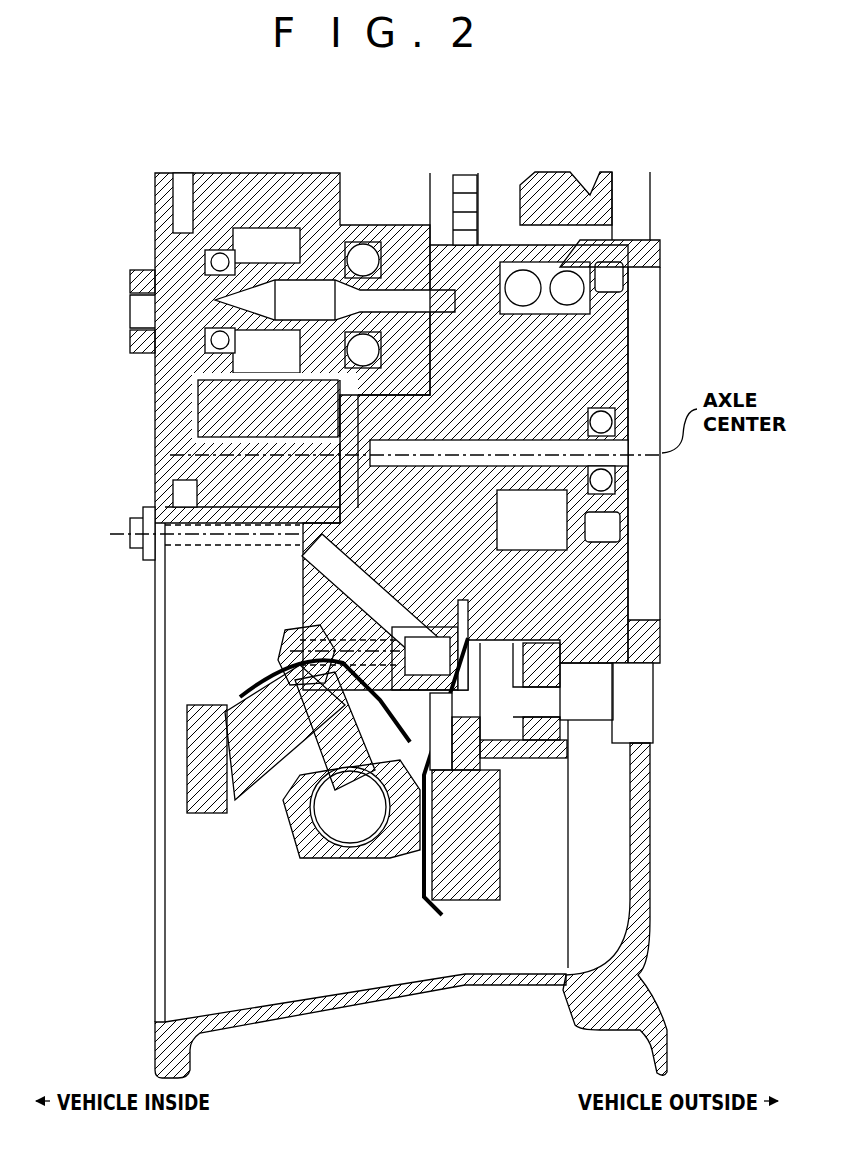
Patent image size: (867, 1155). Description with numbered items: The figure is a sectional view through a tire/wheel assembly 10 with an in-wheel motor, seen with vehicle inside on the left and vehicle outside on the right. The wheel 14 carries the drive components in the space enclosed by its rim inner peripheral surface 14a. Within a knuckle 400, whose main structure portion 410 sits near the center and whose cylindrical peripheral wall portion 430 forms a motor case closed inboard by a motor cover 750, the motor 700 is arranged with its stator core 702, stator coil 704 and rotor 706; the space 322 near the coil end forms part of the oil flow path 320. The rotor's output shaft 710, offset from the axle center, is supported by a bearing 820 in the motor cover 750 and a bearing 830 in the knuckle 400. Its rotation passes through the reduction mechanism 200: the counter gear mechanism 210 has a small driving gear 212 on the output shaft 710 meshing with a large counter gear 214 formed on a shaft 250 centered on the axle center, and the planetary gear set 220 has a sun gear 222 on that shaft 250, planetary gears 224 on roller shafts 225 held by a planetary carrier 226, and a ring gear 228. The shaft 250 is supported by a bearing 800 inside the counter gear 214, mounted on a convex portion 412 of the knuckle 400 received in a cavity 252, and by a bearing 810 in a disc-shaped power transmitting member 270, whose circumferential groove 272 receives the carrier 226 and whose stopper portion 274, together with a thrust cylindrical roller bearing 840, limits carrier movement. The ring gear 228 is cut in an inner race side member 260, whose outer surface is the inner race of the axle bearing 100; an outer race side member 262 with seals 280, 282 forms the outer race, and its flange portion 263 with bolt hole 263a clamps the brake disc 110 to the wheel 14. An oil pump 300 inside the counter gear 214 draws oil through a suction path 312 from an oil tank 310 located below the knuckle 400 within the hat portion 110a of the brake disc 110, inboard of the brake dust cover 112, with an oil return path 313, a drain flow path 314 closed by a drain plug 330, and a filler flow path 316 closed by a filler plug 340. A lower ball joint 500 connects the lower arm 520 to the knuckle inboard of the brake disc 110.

The tire/wheel assembly 10 is at (138, 124).
The wheel 14 is at (652, 822).
The rim inner peripheral surface 14a is at (422, 983).
The axle bearing 100 is at (610, 232).
The brake disc 110 is at (466, 885).
The hat portion 110a is at (533, 755).
The brake dust cover 112 is at (420, 902).
The reduction mechanism 200 is at (490, 120).
The counter gear mechanism 210 is at (432, 230).
The driving gear 212 is at (392, 225).
The counter gear 214 is at (132, 278).
The planetary gear set 220 is at (486, 245).
The sun gear 222 is at (623, 553).
The planetary gear 224 is at (617, 296).
The roller shaft 225 is at (590, 195).
The planetary carrier 226 is at (627, 590).
The ring gear 228 is at (620, 268).
The shaft 250 is at (612, 502).
The cavity 252 is at (500, 640).
The inner race side member 260 is at (635, 628).
The outer race side member 262 is at (655, 671).
The flange portion 263 is at (533, 185).
The bolt hole 263a is at (553, 190).
The power transmitting member 270 is at (627, 610).
The circumferential groove 272 is at (620, 324).
The stopper portion 274 is at (627, 532).
The seal 280 is at (615, 248).
The seal 282 is at (503, 255).
The oil pump 300 is at (296, 585).
The oil tank 310 is at (250, 785).
The suction path 312 is at (292, 660).
The oil return path 313 is at (282, 675).
The drain flow path 314 is at (265, 695).
The filler flow path 316 is at (150, 550).
The oil flow path 320 is at (623, 345).
The space 322 is at (190, 455).
The drain plug 330 is at (300, 641).
The filler plug 340 is at (130, 522).
The knuckle 400 is at (330, 565).
The main structure portion 410 is at (172, 440).
The convex portion 412 is at (140, 320).
The peripheral wall portion 430 is at (300, 545).
The lower ball joint 500 is at (305, 803).
The lower arm 520 is at (195, 725).
The motor 700 is at (290, 170).
The stator core 702 is at (205, 496).
The stator coil 704 is at (220, 470).
The rotor 706 is at (172, 377).
The output shaft 710 is at (335, 300).
The motor cover 750 is at (172, 400).
The bearing 800 is at (325, 600).
The bearing 810 is at (625, 387).
The bearing 820 is at (208, 252).
The bearing 830 is at (356, 242).
The thrust cylindrical roller bearing 840 is at (428, 675).